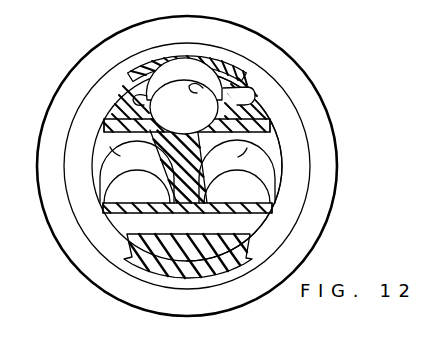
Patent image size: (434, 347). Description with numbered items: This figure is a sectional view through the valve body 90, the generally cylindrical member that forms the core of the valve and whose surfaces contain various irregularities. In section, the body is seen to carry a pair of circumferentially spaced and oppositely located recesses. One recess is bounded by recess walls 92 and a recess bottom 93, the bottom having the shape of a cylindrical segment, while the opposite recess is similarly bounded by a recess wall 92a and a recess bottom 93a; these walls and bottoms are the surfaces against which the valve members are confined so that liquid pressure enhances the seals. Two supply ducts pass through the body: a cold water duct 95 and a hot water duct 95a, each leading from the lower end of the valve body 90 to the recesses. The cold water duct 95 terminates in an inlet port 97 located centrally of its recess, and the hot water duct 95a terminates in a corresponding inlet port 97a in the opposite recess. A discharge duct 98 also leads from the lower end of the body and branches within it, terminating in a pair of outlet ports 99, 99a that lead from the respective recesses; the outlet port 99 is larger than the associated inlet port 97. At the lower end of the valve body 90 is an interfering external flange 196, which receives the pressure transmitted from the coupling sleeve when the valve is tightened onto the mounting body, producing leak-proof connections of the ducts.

The valve body 90 is at (288, 41).
The recess wall 92 is at (127, 75).
The recess wall 92a is at (226, 78).
The recess bottom 93 is at (112, 168).
The recess bottom 93a is at (250, 237).
The cold water duct 95 is at (105, 185).
The hot water duct 95a is at (247, 163).
The inlet port 97 is at (97, 142).
The inlet port 97a is at (282, 143).
The discharge duct 98 is at (203, 88).
The outlet port 99 is at (107, 107).
The outlet port 99a is at (243, 101).
The external flange 196 is at (157, 26).